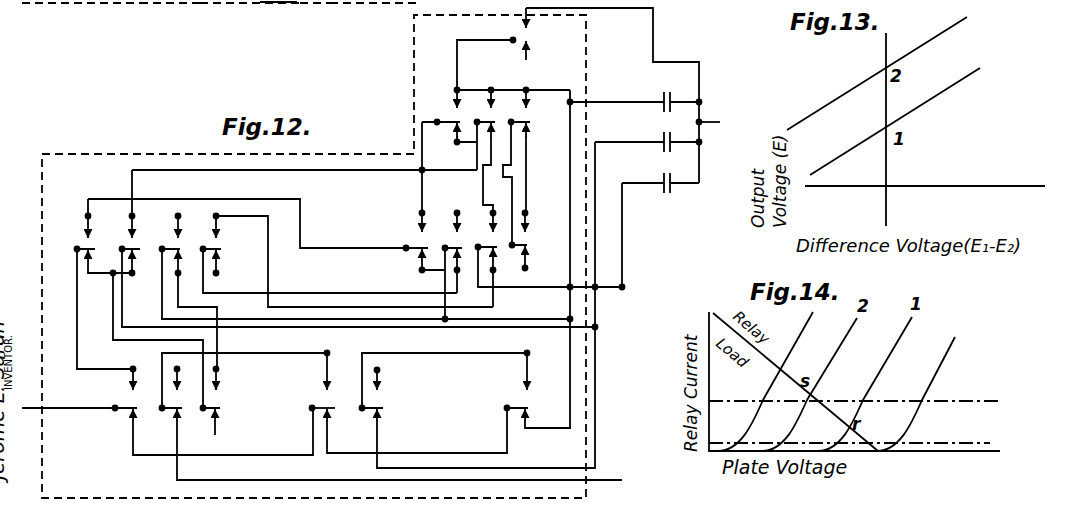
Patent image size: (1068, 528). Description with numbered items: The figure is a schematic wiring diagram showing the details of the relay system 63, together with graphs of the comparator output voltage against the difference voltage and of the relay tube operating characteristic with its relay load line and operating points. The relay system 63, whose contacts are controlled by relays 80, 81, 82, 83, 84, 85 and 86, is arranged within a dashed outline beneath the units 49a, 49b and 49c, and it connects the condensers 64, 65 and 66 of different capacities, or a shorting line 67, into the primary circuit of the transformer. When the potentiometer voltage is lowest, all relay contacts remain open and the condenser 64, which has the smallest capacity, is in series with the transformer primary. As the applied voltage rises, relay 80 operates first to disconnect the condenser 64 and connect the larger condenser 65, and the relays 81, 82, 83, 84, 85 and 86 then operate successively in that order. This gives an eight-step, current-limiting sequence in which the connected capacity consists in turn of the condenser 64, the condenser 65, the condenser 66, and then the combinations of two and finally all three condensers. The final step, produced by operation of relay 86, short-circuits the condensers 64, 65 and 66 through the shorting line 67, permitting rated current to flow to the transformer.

The pulse source unit 49a is at (88, 4).
The pulse source unit 49b is at (278, 6).
The pulse source unit 49c is at (379, 3).
The relay system 63 is at (148, 150).
The condenser 64 is at (660, 101).
The condenser 65 is at (660, 141).
The condenser 66 is at (662, 182).
The shorting line 67 is at (683, 62).
The relay 80 is at (477, 279).
The relay 81 is at (394, 401).
The relay 82 is at (322, 416).
The relay 83 is at (321, 287).
The relay 84 is at (497, 252).
The relay 85 is at (481, 166).
The relay 86 is at (491, 49).